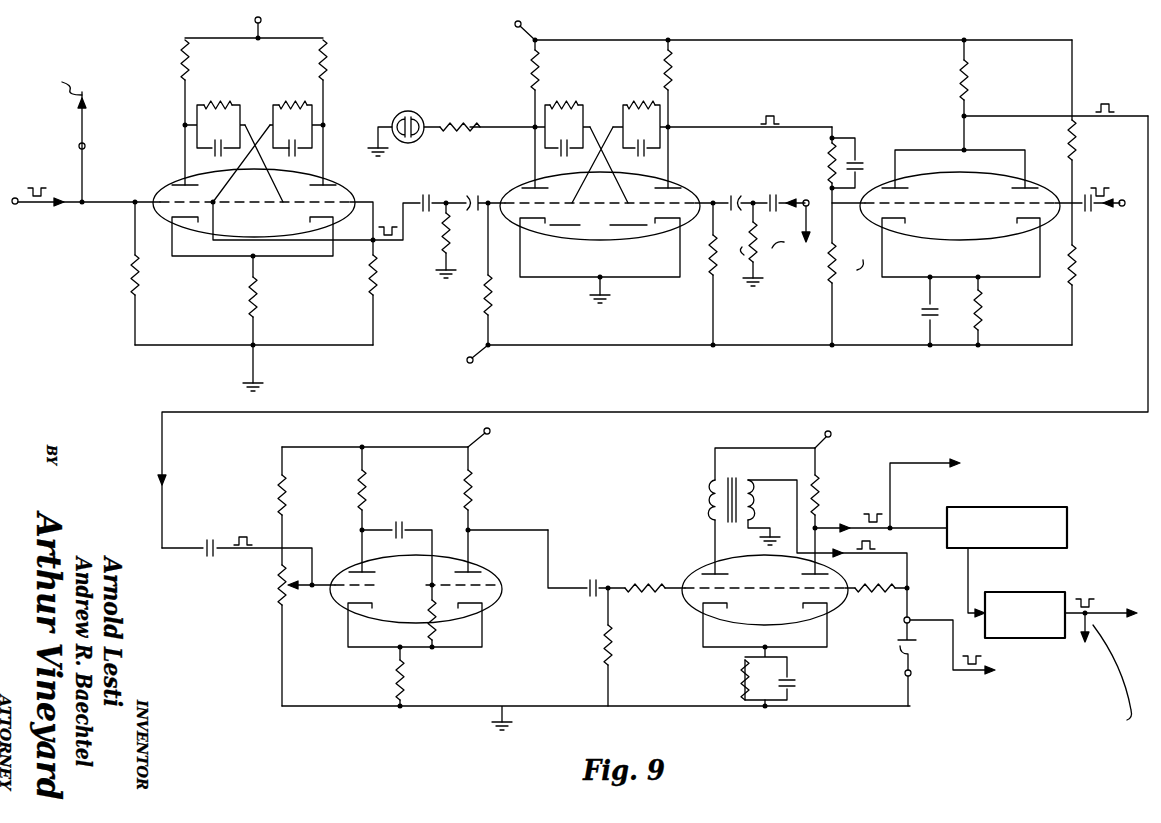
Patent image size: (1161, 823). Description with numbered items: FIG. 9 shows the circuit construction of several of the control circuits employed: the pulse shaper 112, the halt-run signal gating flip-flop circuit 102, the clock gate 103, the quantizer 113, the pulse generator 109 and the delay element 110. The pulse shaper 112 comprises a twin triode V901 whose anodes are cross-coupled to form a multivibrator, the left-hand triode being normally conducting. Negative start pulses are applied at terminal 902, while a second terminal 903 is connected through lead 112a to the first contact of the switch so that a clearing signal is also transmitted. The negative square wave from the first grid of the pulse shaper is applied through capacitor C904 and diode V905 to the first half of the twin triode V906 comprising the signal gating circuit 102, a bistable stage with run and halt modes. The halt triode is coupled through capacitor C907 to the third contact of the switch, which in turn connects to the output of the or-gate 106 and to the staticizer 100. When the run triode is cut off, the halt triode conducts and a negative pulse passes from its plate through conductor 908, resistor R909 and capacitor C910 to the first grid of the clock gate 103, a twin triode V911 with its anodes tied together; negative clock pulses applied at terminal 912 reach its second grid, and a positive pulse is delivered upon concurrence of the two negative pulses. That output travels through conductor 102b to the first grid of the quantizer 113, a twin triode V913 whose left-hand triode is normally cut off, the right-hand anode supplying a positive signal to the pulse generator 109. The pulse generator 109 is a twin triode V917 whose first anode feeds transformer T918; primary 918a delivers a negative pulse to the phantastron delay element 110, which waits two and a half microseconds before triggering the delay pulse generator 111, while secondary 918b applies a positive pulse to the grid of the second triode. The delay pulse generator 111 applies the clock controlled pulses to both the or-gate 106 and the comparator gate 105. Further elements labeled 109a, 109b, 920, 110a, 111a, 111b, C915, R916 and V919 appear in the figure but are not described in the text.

The pulse shaper 112 is at (400, 366).
The lead 112a is at (86, 119).
The second terminal 903 is at (86, 146).
The input terminal 902 is at (15, 205).
The conductor 908 is at (681, 123).
The halt-run signal gating flip-flop circuit 102 is at (685, 369).
The clock gate 103 is at (1028, 372).
The terminal 912 is at (1125, 200).
The conductor 102b is at (1062, 427).
The quantizer 113 is at (400, 735).
The pulse generator 109 is at (842, 738).
The pulse generator output lead to ring counter 109a is at (964, 678).
The pulse generator output lead to phantastron 109b is at (893, 525).
The output terminal 920 is at (912, 619).
The staticizer 100 is at (1060, 470).
The delay element 110 is at (988, 505).
The phantastron output lead 110a is at (972, 572).
The or-gate 106 is at (1110, 531).
The delay pulse generator 111 is at (1034, 593).
The pulse generator output lead 111a is at (1111, 608).
The pulse generator output lead to comparator gate 111b is at (1078, 644).
The comparator gate 105 is at (1067, 685).
The twin triode V901 is at (280, 228).
The capacitor C904 is at (424, 214).
The diode V905 is at (473, 195).
The twin triode V906 is at (627, 258).
The capacitor C907 is at (772, 201).
The resistor R909 is at (838, 136).
The capacitor C910 is at (873, 160).
The twin triode V911 is at (972, 256).
The twin triode V913 is at (423, 587).
The coupling capacitor C915 is at (605, 562).
The grid resistor R916 is at (597, 642).
The transformer T918 is at (760, 471).
The primary winding 918a is at (710, 498).
The secondary winding 918b is at (754, 494).
The twin triode V917 is at (768, 563).
The diode V919 is at (923, 664).